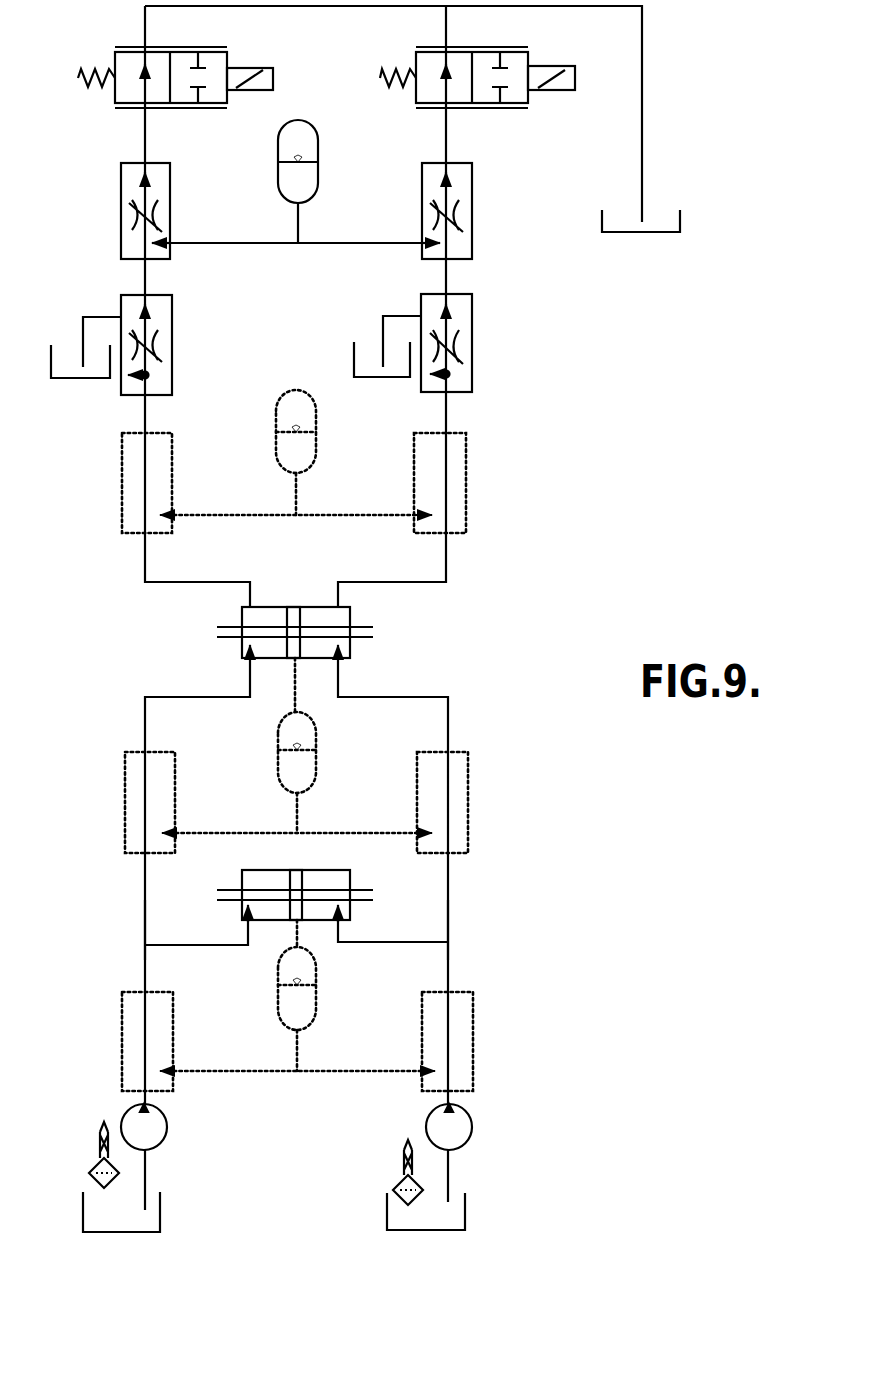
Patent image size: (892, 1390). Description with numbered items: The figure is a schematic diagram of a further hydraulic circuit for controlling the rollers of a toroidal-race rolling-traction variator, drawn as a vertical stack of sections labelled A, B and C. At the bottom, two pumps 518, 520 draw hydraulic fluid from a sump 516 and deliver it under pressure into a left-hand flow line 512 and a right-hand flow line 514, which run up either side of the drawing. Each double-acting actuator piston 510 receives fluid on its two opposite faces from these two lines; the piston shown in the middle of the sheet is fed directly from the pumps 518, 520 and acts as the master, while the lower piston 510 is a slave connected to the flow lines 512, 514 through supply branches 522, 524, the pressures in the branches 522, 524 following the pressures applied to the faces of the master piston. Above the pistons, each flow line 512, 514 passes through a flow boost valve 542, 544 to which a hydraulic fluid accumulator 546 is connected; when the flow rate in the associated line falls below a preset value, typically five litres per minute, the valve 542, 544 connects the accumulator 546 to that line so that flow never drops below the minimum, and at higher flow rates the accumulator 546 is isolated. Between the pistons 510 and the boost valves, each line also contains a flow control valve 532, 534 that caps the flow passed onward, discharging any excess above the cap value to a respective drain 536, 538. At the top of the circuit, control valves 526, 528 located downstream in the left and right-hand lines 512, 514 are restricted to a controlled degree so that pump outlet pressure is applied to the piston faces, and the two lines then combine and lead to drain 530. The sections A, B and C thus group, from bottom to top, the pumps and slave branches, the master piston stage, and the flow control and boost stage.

The double-acting actuator piston 510 is at (475, 594).
The left-hand flow line 512 is at (143, 928).
The right-hand flow line 514 is at (450, 930).
The sump 516 is at (118, 1236).
The pump 518 is at (120, 1118).
The pump 520 is at (472, 1110).
The supply branch 522 is at (190, 947).
The supply branch 524 is at (398, 947).
The control valve 526 is at (208, 42).
The control valve 528 is at (430, 45).
The drain 530 is at (592, 200).
The flow control valve 532 is at (194, 332).
The flow control valve 534 is at (410, 305).
The drain 536 is at (79, 384).
The drain 538 is at (392, 382).
The flow boost valve 542 is at (192, 192).
The flow boost valve 544 is at (420, 158).
The hydraulic fluid accumulator 546 is at (284, 206).
The first hydraulic circuit section A is at (500, 1055).
The second hydraulic circuit section B is at (505, 812).
The third hydraulic circuit section C is at (490, 483).